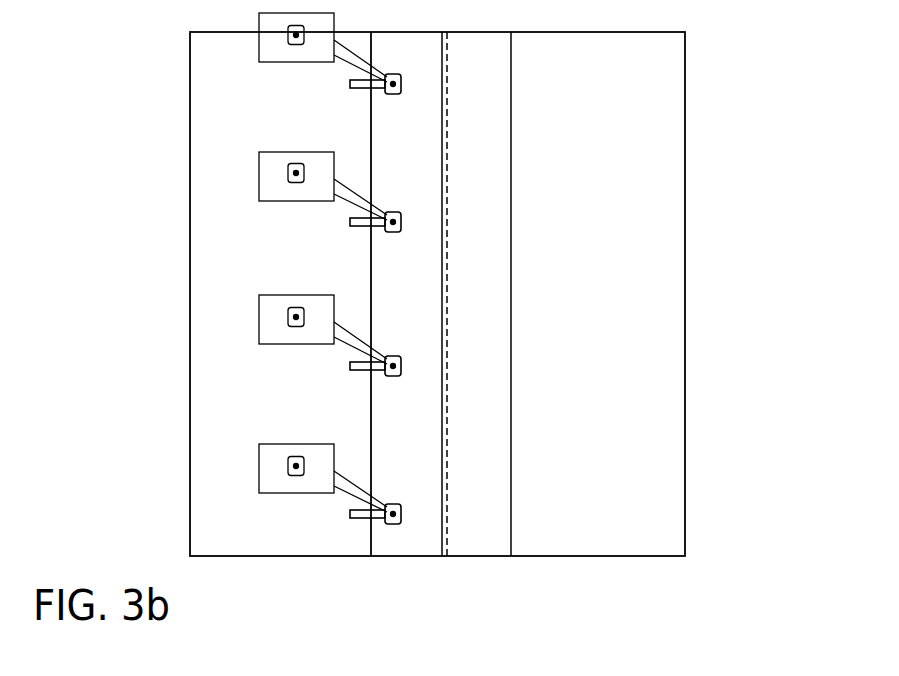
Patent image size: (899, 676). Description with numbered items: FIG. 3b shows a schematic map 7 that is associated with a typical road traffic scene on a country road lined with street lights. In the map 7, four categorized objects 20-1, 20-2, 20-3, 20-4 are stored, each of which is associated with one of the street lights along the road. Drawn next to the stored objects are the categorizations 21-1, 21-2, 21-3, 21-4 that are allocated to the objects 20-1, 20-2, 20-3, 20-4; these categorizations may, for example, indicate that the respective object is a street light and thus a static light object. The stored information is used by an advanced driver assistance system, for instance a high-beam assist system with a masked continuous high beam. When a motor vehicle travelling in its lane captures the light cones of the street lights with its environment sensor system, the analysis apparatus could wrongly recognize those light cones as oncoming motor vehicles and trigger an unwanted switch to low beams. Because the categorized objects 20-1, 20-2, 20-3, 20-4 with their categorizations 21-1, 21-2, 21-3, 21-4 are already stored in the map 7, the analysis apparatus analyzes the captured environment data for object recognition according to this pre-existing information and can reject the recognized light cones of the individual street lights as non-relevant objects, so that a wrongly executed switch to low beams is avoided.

The map 7 is at (128, 123).
The categorized object 20-1 is at (401, 514).
The categorized object 20-2 is at (401, 366).
The categorized object 20-3 is at (401, 222).
The categorized object 20-4 is at (401, 84).
The categorization 21-1 is at (288, 466).
The categorization 21-2 is at (288, 317).
The categorization 21-3 is at (288, 173).
The categorization 21-4 is at (288, 35).